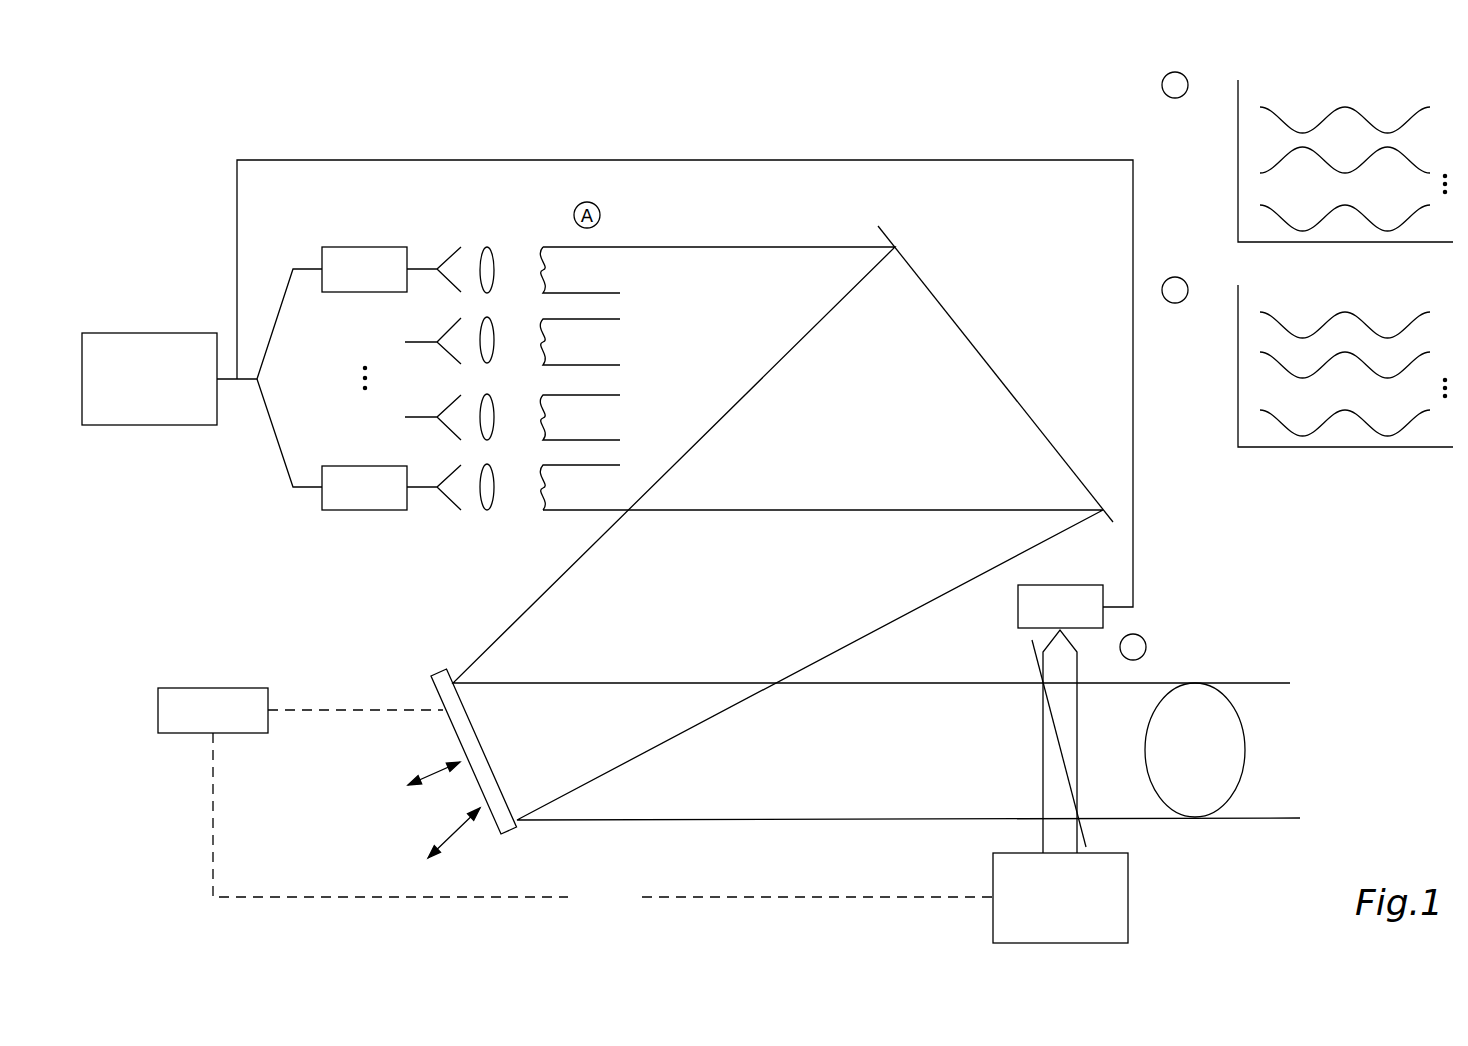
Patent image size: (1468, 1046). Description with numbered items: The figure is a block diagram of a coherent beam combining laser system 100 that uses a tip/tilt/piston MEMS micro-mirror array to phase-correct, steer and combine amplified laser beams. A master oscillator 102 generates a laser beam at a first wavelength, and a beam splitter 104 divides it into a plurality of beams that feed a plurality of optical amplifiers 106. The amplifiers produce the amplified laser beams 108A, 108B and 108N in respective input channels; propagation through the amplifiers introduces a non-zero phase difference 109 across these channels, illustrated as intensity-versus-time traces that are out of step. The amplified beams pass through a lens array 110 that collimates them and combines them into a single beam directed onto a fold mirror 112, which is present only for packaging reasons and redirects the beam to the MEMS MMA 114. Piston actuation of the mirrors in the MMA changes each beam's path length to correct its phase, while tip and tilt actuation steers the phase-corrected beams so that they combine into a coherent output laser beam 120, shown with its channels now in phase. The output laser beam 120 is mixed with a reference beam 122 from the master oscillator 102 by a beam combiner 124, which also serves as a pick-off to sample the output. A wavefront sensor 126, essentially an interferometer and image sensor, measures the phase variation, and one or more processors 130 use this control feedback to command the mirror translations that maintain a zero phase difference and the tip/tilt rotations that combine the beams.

The CBC laser system 100 is at (165, 105).
The master oscillator 102 is at (150, 333).
The beam splitter 104 is at (276, 438).
The optical amplifiers 106 is at (364, 247).
The amplified laser beam 108A is at (444, 256).
The amplified laser beam 108B is at (444, 328).
The amplified laser beam 108N is at (444, 474).
The non-zero phase difference 109 is at (1396, 90).
The lens array 110 is at (490, 228).
The fold mirror 112 is at (950, 322).
The MEMS MMA 114 is at (440, 670).
The output laser beam 120 is at (907, 681).
The reference beam 122 is at (1064, 585).
The beam combiner 124 is at (1032, 648).
The wavefront sensor 126 is at (1130, 870).
The processors 130 is at (216, 688).